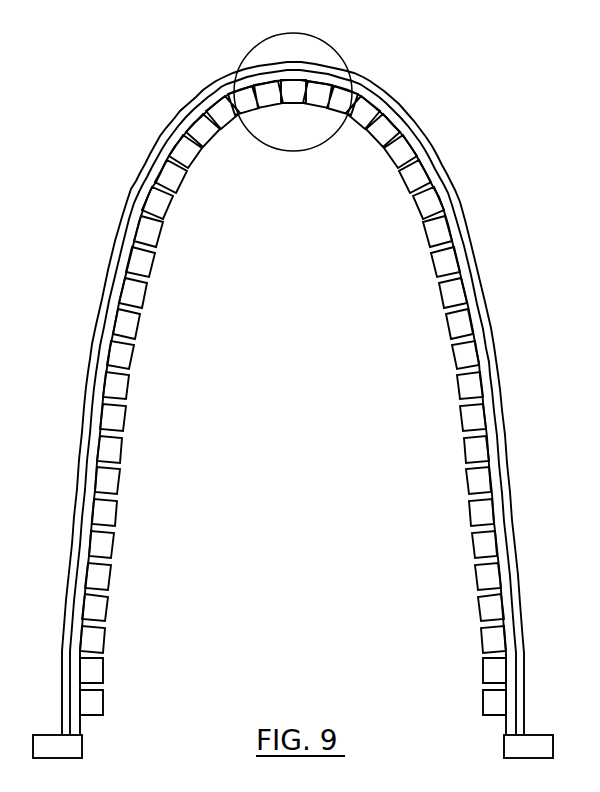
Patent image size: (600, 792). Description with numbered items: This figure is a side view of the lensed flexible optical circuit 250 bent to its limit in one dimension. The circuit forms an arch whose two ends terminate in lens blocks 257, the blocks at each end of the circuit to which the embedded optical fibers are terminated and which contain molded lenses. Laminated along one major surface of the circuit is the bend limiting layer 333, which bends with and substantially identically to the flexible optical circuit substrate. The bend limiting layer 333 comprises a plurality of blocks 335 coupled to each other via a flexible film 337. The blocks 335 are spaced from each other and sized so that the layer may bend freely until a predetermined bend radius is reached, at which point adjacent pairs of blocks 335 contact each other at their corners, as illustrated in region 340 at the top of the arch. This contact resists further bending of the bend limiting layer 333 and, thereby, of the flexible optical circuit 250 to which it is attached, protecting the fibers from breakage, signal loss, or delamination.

The lensed flexible optical circuit 250 is at (385, 94).
The bend limiting layer 333 is at (498, 722).
The blocks 335 is at (141, 280).
The flexible film 337 is at (478, 622).
The region 340 is at (248, 58).
The lens blocks 257 is at (70, 749).